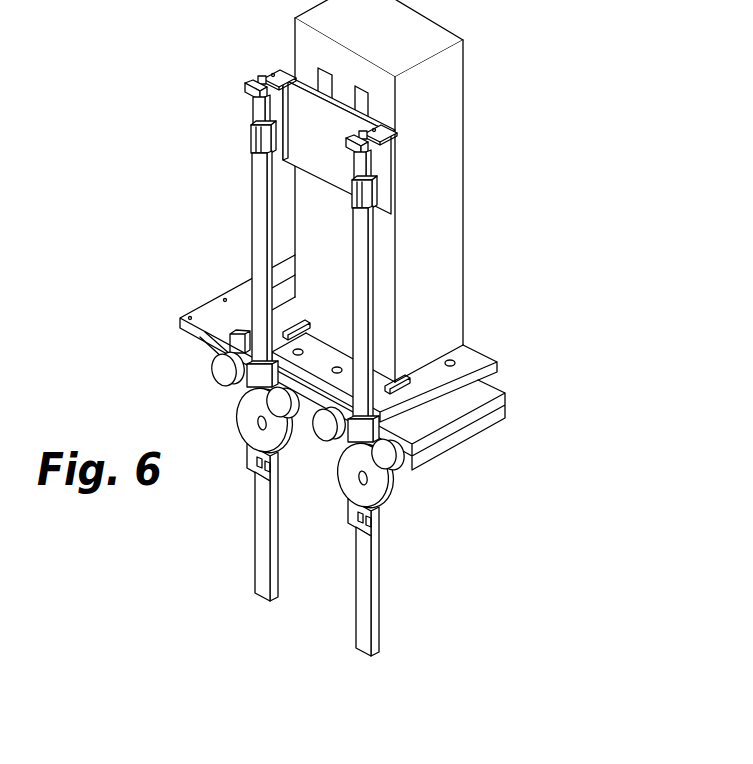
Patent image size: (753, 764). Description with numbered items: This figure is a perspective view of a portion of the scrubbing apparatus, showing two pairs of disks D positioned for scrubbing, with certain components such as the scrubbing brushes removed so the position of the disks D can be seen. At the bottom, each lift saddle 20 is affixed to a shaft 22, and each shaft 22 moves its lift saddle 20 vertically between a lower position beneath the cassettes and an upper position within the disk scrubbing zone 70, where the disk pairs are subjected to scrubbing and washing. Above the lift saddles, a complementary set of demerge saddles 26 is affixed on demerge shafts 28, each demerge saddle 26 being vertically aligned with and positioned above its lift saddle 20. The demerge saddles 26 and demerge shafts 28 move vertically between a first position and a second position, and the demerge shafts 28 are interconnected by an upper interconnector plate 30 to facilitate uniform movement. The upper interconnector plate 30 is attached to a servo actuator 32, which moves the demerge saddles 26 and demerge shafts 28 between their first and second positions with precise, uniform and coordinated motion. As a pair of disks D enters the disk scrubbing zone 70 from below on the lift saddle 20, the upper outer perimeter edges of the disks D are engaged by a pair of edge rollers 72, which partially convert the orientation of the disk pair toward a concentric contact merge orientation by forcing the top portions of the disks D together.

The servo actuator 32 is at (447, 133).
The upper interconnector plate 30 is at (342, 156).
The demerge shaft 28 is at (262, 242).
The demerge saddle 26 is at (215, 370).
The lift saddle 20 is at (245, 408).
The edge roller 72 is at (282, 410).
The shaft 22 is at (262, 550).
The disk scrubbing zone 70 is at (458, 463).
The disk D is at (245, 392).